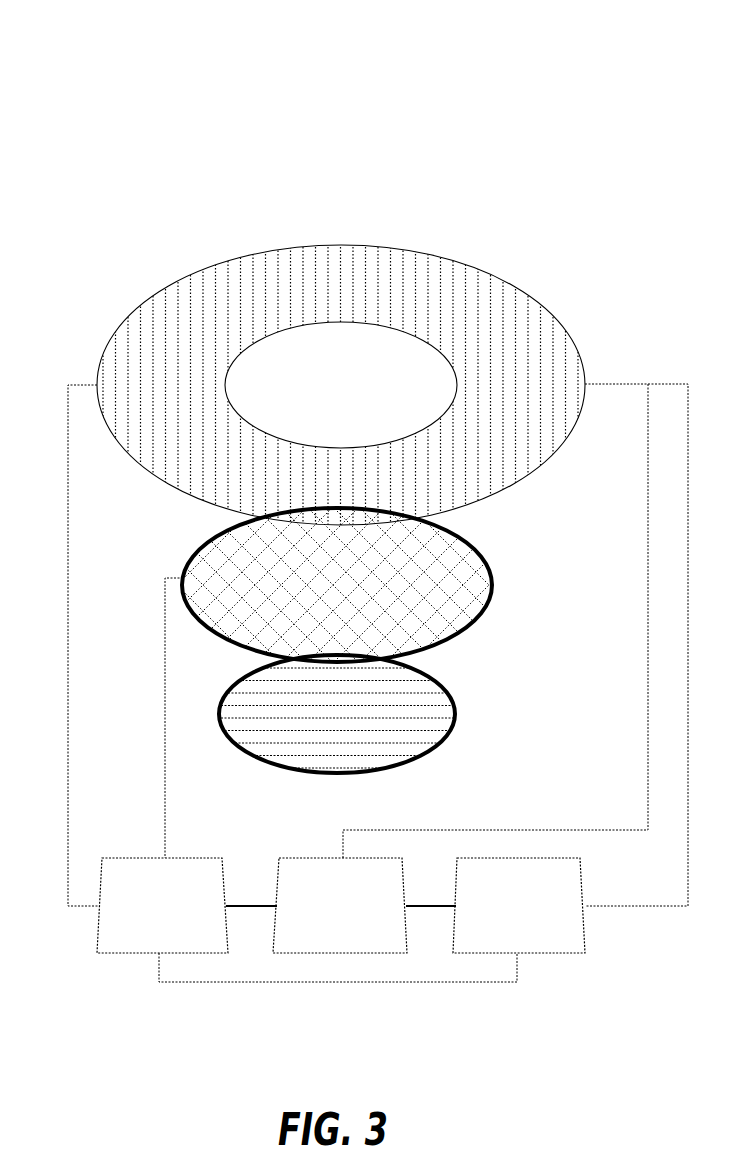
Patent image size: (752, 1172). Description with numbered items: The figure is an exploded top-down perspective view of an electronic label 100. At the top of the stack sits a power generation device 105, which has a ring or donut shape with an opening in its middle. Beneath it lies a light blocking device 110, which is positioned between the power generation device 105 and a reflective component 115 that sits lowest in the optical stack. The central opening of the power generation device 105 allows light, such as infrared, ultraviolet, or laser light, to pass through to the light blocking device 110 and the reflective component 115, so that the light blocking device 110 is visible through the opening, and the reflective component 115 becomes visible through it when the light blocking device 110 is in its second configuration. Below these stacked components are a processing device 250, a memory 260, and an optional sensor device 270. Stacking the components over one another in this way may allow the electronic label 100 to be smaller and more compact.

The electronic label 100 is at (146, 104).
The power generation device 105 is at (508, 283).
The light blocking device 110 is at (487, 557).
The reflective component 115 is at (338, 775).
The processing device 250 is at (162, 905).
The memory 260 is at (340, 905).
The sensor device 270 is at (519, 905).